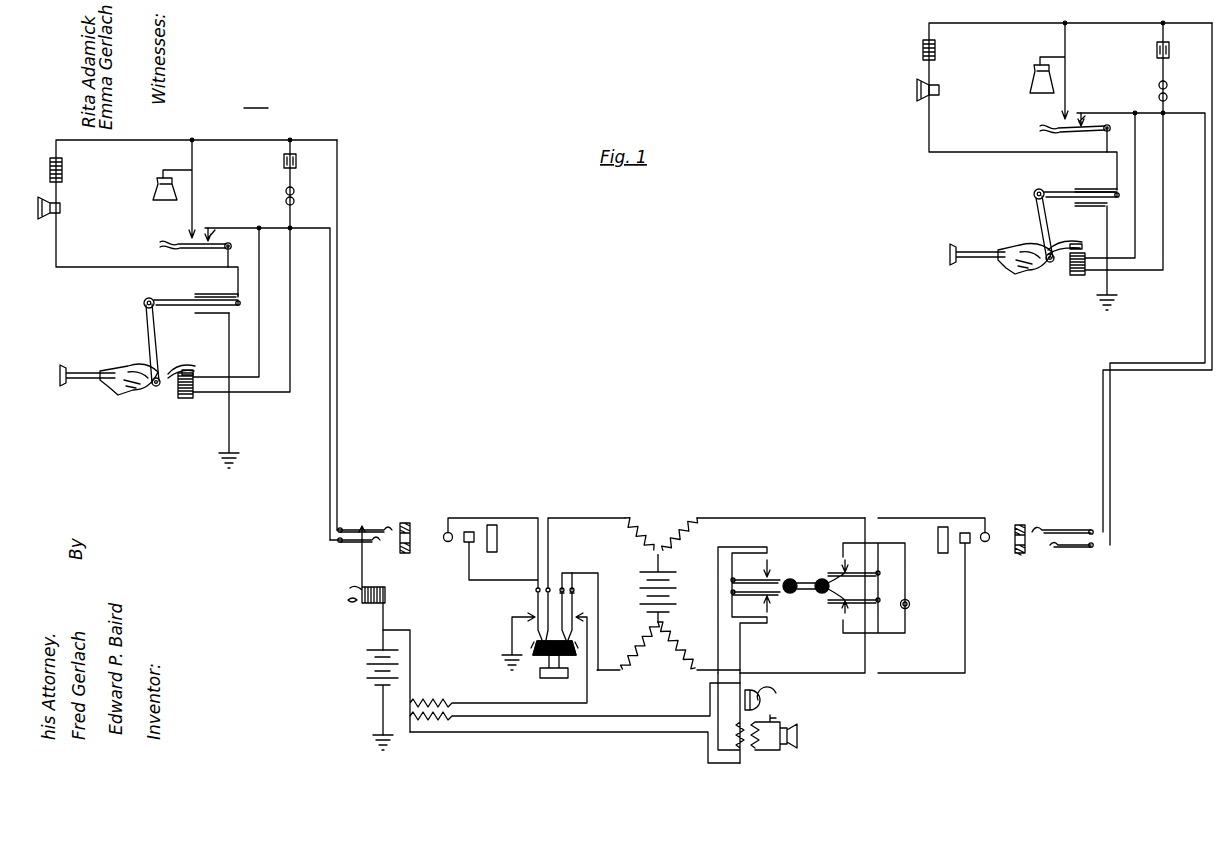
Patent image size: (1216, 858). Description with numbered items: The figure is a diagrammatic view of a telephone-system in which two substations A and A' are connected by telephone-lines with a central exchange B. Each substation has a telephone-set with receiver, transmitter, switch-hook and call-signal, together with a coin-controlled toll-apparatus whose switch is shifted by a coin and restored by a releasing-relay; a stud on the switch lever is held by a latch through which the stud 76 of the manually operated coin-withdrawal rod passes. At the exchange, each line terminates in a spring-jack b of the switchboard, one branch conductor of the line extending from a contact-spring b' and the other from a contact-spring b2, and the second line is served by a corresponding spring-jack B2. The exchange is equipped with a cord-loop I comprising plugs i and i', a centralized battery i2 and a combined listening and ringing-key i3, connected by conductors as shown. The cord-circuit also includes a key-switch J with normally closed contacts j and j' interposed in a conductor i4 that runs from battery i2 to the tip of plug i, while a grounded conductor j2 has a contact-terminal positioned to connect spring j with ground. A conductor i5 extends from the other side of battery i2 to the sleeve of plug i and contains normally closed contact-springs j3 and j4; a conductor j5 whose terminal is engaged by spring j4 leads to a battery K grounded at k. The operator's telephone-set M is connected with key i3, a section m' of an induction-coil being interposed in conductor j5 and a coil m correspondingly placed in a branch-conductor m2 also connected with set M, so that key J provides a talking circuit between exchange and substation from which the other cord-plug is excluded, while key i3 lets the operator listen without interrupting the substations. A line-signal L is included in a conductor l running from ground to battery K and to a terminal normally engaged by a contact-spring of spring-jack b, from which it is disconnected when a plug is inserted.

The substation A is at (256, 99).
The substation A' is at (882, 64).
The central exchange B is at (670, 464).
The second spring-jack switch B2 is at (1054, 522).
The spring-jack b is at (413, 526).
The contact-spring b' is at (344, 557).
The contact-spring b2 is at (346, 527).
The cord-loop I is at (732, 511).
The plug i is at (492, 538).
The plug i' is at (934, 578).
The centralized battery i2 is at (669, 588).
The combined listening and ringing-key i3 is at (814, 595).
The conductor i4 is at (549, 517).
The conductor i5 is at (469, 580).
The key-switch J is at (547, 639).
The contact j is at (511, 598).
The contact j' is at (498, 623).
The grounded conductor j2 is at (510, 636).
The contact-spring j3 is at (565, 587).
The contact-spring j4 is at (576, 588).
The conductor j5 is at (590, 690).
The battery K is at (368, 692).
The ground k is at (374, 739).
The line-signal L is at (360, 595).
The conductor l is at (366, 608).
The operator's telephone-set M is at (759, 718).
The coil m is at (575, 721).
The section of induction-coil m' is at (485, 681).
The branch-conductor m2 is at (575, 747).
The stud 76 is at (122, 396).